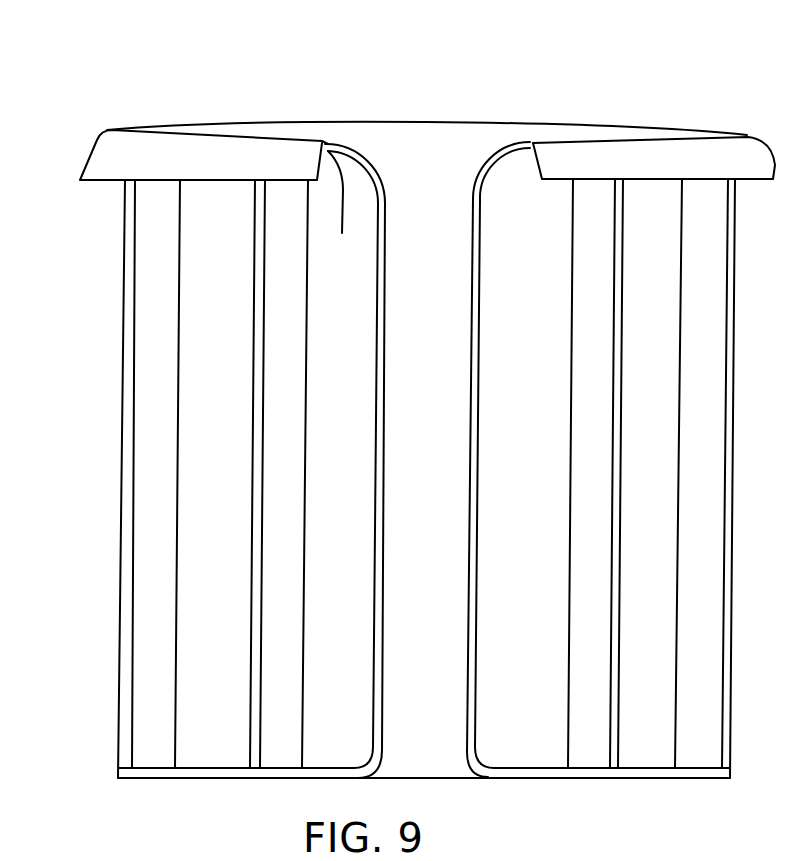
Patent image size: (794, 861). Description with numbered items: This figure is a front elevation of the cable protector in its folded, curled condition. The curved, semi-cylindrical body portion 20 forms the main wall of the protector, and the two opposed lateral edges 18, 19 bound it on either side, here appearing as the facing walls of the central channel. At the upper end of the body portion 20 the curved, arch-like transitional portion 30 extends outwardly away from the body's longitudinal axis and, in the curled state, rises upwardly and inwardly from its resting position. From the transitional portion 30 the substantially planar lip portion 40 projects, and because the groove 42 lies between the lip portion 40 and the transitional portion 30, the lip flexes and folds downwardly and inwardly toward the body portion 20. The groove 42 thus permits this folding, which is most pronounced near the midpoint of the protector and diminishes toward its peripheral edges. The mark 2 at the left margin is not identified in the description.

The transitional portion 30 is at (372, 150).
The lip portion 40 is at (100, 150).
The lateral edge 18 is at (388, 316).
The lateral edge 19 is at (473, 307).
The groove 42 is at (342, 219).
The body portion 20 is at (366, 479).
The panel bars 2 is at (369, 478).